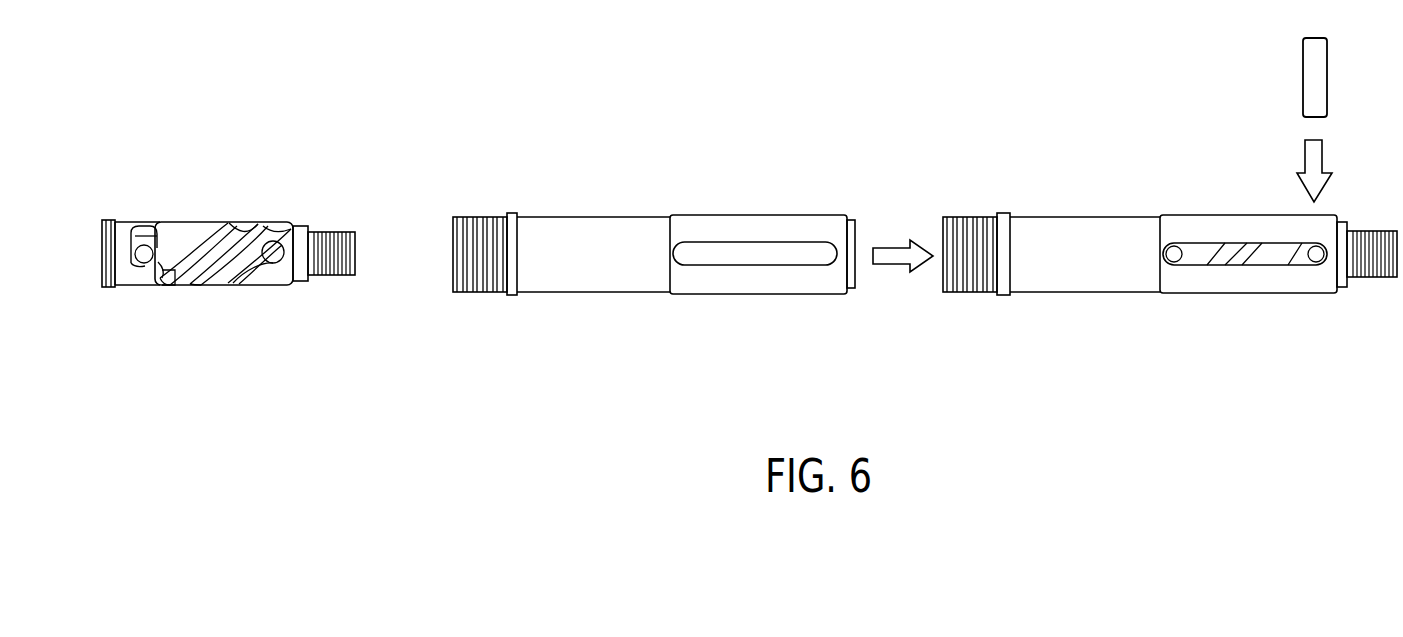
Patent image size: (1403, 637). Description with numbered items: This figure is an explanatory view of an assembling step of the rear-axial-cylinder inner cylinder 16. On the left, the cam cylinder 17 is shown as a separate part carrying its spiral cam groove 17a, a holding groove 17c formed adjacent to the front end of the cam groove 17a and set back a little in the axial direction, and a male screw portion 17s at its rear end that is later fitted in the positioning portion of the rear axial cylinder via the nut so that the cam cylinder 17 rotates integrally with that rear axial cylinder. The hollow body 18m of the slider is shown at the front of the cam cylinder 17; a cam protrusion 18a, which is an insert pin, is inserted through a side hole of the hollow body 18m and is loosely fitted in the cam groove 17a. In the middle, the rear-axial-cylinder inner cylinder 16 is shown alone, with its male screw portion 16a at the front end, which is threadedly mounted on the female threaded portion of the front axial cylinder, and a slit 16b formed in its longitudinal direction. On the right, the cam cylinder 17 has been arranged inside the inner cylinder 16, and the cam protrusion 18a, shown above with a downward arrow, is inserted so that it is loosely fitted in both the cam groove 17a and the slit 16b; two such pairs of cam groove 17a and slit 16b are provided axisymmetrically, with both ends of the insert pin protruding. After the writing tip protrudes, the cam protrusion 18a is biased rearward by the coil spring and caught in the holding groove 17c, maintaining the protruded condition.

The rear-axial-cylinder inner cylinder 16 is at (587, 216).
The male screw portion 16a is at (480, 217).
The slit 16b is at (757, 242).
The cam cylinder 17 is at (190, 222).
The spiral cam groove 17a is at (186, 258).
The holding groove 17c is at (162, 262).
The male screw portion 17s is at (333, 237).
The cam protrusion 18a is at (1303, 78).
The hollow body 18m is at (140, 233).